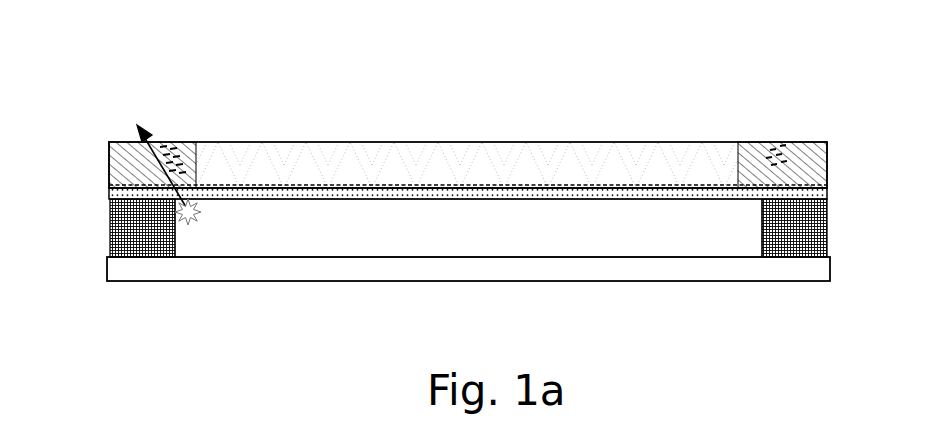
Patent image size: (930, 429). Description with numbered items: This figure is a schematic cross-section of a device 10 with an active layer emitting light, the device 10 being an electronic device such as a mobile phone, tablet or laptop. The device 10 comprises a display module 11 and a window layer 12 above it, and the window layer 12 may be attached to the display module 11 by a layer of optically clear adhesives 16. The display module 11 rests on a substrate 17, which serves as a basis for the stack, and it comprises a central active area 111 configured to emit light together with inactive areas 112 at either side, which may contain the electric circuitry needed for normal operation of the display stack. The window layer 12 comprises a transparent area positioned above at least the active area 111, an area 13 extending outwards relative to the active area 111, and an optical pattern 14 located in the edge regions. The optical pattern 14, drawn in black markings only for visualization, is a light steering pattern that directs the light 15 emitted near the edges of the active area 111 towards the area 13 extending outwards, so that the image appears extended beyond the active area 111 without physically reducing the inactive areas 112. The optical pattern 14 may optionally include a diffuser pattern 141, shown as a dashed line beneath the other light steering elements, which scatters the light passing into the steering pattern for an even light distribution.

The device 10 is at (313, 53).
The display module 11 is at (105, 238).
The active area 111 is at (320, 232).
The inactive areas 112 is at (152, 240).
The window layer 12 is at (682, 172).
The area extending outwards 13 is at (120, 157).
The optical pattern 14 is at (172, 150).
The diffuser pattern 141 is at (125, 185).
The light 15 is at (198, 215).
The optically clear adhesives 16 is at (543, 193).
The substrate 17 is at (697, 271).